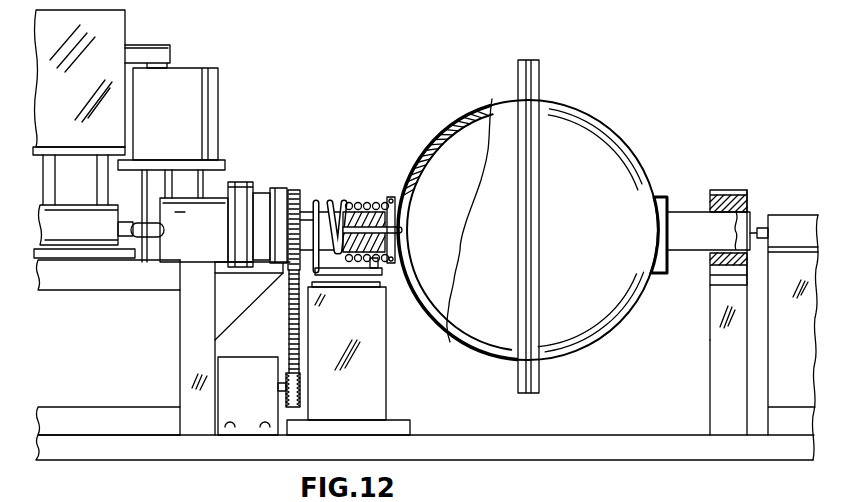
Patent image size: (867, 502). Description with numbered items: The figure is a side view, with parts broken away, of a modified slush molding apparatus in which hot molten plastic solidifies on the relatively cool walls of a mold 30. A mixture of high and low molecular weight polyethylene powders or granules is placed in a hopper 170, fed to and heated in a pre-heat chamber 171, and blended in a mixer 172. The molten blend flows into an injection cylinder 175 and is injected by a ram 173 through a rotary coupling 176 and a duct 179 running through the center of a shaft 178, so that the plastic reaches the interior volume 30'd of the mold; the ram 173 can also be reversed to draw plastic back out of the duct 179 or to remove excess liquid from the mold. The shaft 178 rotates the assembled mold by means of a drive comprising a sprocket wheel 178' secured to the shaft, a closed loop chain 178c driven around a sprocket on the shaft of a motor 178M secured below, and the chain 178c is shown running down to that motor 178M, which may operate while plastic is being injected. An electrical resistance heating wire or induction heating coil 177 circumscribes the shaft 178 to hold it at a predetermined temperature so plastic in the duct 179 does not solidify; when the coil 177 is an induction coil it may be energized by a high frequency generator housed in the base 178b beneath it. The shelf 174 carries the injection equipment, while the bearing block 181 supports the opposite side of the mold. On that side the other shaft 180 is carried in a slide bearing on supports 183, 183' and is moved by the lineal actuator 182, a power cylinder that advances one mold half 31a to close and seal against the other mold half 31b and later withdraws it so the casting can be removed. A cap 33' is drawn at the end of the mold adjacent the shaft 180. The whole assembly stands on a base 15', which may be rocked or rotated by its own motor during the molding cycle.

The hopper 170 is at (121, 31).
The pre-heat chamber 171 is at (171, 50).
The mixer 172 is at (219, 80).
The ram 173 is at (85, 235).
The shelf 174 is at (61, 284).
The injection cylinder 175 is at (200, 243).
The rotary coupling 176 is at (255, 194).
The heating coil 177 is at (318, 201).
The shaft 178 is at (368, 220).
The sprocket wheel 178' is at (323, 204).
The base 178b is at (370, 418).
The closed loop chain 178c is at (289, 302).
The motor 178M is at (262, 395).
The duct 179 is at (405, 231).
The shaft 180 is at (710, 246).
The bearing 181 is at (752, 222).
The lineal actuator 182 is at (777, 220).
The slide bearing support 183 is at (703, 306).
The slide bearing support 183' is at (688, 387).
The mold 30 is at (522, 226).
The interior volume 30'd is at (457, 224).
The mold half 31a is at (600, 129).
The mold half 31b is at (479, 355).
The pivot cap 33' is at (670, 219).
The base 15' is at (425, 460).